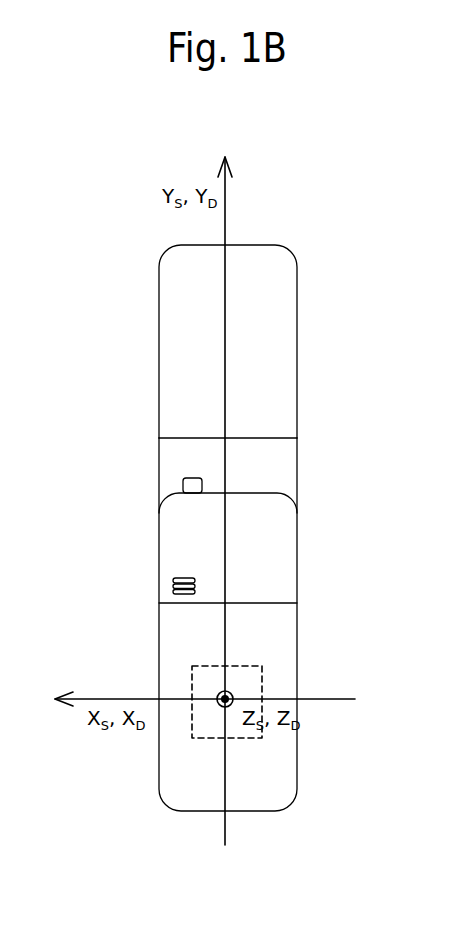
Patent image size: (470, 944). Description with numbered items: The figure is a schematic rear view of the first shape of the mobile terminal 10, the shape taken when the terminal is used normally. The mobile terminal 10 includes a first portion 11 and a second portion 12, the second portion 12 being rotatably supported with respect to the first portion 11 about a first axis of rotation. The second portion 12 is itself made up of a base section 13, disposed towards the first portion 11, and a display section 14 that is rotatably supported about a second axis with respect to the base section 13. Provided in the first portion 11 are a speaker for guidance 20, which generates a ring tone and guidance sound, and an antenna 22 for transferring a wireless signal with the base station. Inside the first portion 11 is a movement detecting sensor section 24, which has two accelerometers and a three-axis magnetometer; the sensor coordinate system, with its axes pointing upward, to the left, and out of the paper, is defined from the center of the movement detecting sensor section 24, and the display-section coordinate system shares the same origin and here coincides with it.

The mobile terminal 10 is at (259, 459).
The first portion 11 is at (242, 614).
The second portion 12 is at (303, 379).
The base section 13 is at (297, 465).
The display section 14 is at (297, 415).
The speaker for guidance 20 is at (178, 578).
The antenna 22 is at (183, 490).
The movement detecting sensor section 24 is at (190, 683).